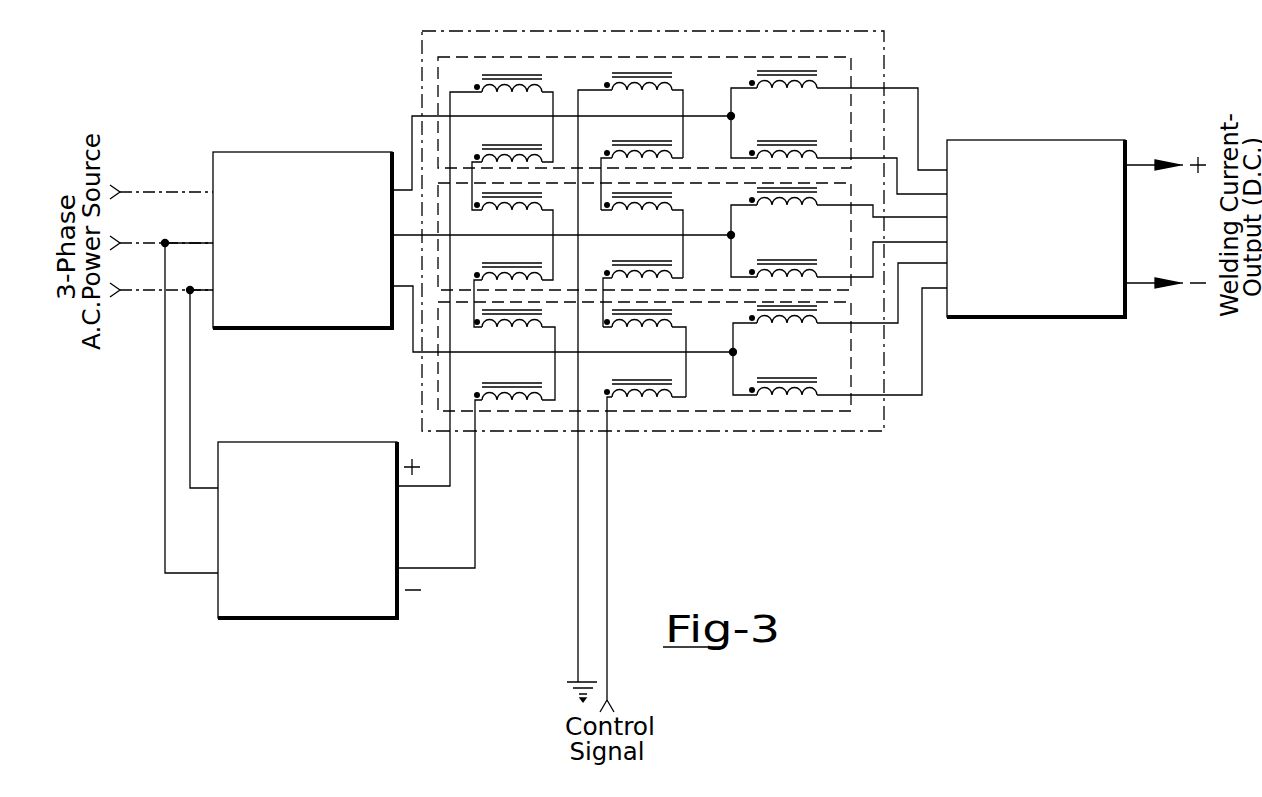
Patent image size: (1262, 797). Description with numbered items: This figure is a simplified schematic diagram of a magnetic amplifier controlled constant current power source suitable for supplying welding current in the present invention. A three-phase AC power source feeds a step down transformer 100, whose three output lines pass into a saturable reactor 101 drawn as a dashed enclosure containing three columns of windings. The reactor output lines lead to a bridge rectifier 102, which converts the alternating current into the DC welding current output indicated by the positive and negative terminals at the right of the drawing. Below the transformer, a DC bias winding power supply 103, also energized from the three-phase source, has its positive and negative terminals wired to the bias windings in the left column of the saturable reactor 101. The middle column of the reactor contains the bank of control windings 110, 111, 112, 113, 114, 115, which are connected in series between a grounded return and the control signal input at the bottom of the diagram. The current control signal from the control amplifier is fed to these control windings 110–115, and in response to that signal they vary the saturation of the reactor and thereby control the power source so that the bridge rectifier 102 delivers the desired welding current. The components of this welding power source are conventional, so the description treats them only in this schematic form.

The step down transformer 100 is at (327, 312).
The saturable reactor 101 is at (692, 431).
The bridge rectifier 102 is at (1010, 300).
The DC bias winding power supply 103 is at (330, 599).
The control winding 110 is at (676, 395).
The control winding 111 is at (676, 325).
The control winding 112 is at (676, 276).
The control winding 113 is at (676, 208).
The control winding 114 is at (676, 156).
The control winding 115 is at (676, 88).